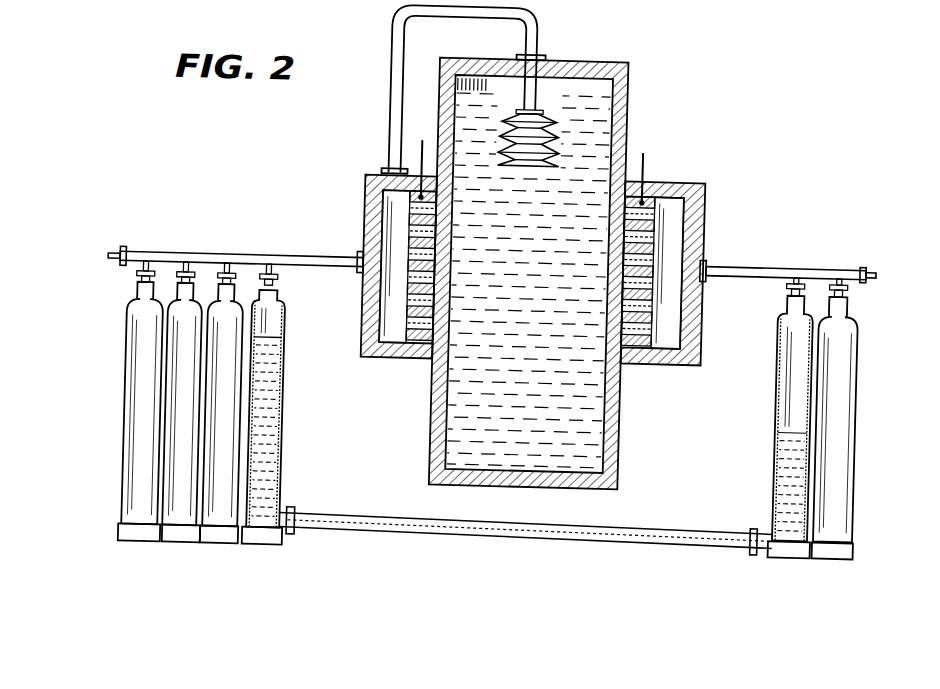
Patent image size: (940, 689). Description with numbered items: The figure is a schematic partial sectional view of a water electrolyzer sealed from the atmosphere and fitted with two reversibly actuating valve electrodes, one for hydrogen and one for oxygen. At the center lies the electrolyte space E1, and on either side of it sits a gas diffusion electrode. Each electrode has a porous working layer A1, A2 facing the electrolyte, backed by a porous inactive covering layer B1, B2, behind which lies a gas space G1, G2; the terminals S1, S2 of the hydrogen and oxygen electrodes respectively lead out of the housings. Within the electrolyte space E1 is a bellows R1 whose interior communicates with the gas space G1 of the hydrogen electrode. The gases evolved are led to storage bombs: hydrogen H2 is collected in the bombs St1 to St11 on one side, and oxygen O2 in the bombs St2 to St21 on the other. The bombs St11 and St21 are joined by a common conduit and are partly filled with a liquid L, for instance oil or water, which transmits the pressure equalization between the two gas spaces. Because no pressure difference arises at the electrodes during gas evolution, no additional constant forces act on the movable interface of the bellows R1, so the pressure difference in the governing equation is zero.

The electrolyte space E1 is at (527, 456).
The bellows R1 is at (528, 166).
The terminal of the hydrogen electrode S1 is at (419, 143).
The terminal of the oxygen electrode S2 is at (640, 150).
The porous working layer A1 is at (408, 212).
The porous working layer A2 is at (655, 222).
The gas space G1 is at (388, 303).
The gas space G2 is at (672, 313).
The porous inactive covering layer B1 is at (428, 338).
The porous inactive covering layer B2 is at (630, 338).
The hydrogen H2 is at (184, 402).
The liquid L is at (272, 384).
The storage bomb for hydrogen St1 is at (128, 424).
The storage bomb for hydrogen St11 is at (288, 461).
The storage bomb for oxygen St21 is at (780, 405).
The oxygen O2 is at (790, 377).
The storage bomb for oxygen St2 is at (858, 384).